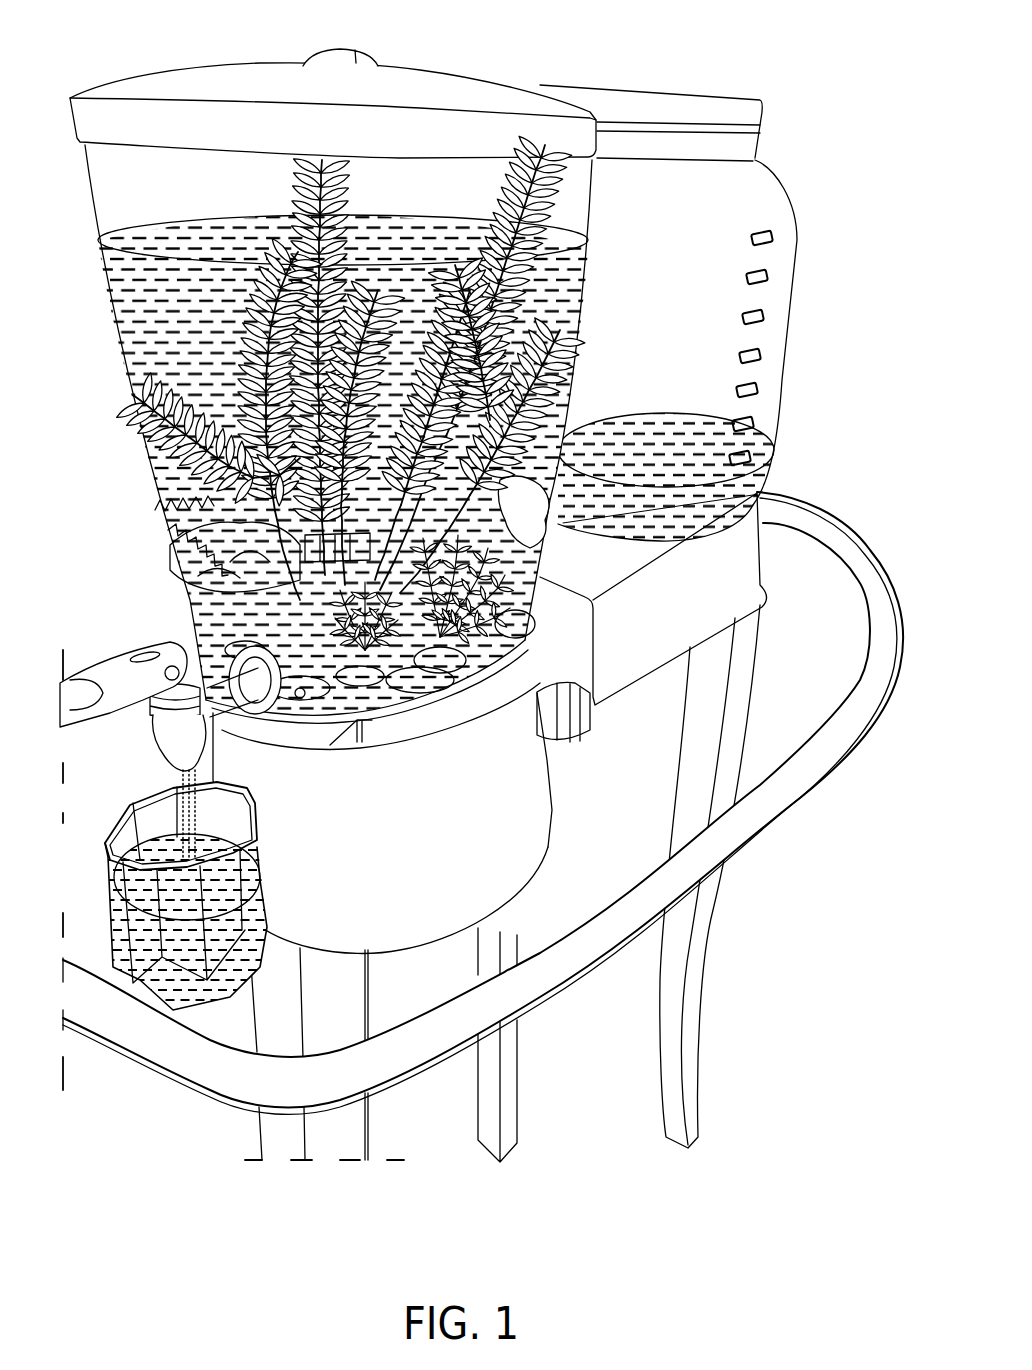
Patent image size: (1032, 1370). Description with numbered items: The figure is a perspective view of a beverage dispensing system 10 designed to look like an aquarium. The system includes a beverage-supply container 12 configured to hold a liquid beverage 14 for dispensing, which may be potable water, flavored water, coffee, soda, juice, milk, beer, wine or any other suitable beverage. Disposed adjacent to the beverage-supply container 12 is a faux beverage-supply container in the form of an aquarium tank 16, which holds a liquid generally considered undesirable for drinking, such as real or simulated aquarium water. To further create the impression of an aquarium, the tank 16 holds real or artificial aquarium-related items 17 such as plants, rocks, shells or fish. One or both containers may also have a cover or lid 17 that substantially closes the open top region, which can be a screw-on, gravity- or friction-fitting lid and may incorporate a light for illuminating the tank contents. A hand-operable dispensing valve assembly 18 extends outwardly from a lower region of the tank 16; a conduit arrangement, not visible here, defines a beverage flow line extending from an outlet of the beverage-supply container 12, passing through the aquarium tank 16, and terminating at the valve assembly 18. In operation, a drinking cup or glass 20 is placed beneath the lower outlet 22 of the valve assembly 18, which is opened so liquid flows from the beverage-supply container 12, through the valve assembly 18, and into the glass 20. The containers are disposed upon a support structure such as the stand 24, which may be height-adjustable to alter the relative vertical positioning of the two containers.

The beverage dispensing system 10 is at (805, 160).
The beverage-supply container 12 is at (780, 268).
The liquid beverage 14 is at (727, 497).
The aquarium tank 16 is at (107, 293).
The aquarium-related items and cover or lid 17 is at (610, 105).
The dispensing valve assembly 18 is at (147, 607).
The drinking cup or glass 20 is at (130, 901).
The lower outlet 22 is at (175, 779).
The stand 24 is at (737, 583).